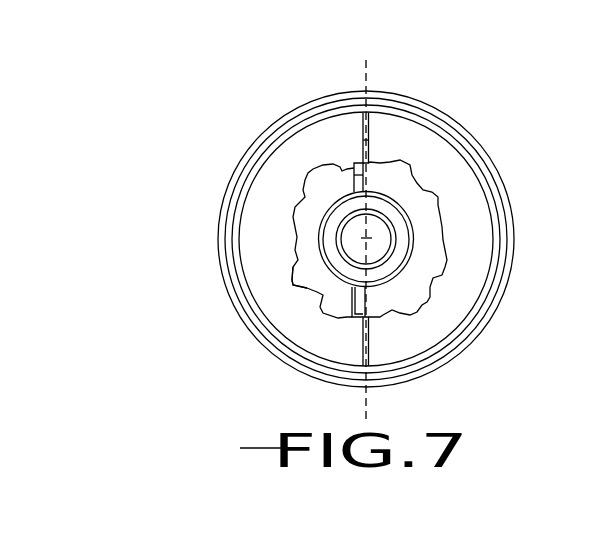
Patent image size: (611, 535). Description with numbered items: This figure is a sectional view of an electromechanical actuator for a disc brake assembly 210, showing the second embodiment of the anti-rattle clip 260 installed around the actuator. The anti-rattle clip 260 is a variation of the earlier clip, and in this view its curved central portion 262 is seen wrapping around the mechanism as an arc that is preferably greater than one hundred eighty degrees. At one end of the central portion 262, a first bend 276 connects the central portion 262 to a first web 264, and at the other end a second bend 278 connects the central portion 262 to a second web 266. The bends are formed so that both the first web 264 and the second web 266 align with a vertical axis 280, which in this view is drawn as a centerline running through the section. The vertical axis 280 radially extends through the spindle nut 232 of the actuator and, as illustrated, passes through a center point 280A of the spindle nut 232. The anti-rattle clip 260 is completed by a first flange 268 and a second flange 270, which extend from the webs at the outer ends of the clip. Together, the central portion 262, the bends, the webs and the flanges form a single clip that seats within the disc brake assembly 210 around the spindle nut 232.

The disc brake assembly 210 is at (286, 97).
The spindle nut 232 is at (387, 267).
The anti-rattle clip 260 is at (463, 189).
The central portion 262 is at (413, 245).
The first web 264 is at (370, 145).
The second web 266 is at (363, 340).
The first flange 268 is at (376, 113).
The second flange 270 is at (370, 359).
The first bend 276 is at (354, 180).
The second bend 278 is at (295, 285).
The vertical axis 280 is at (368, 88).
The center point 280A is at (362, 237).